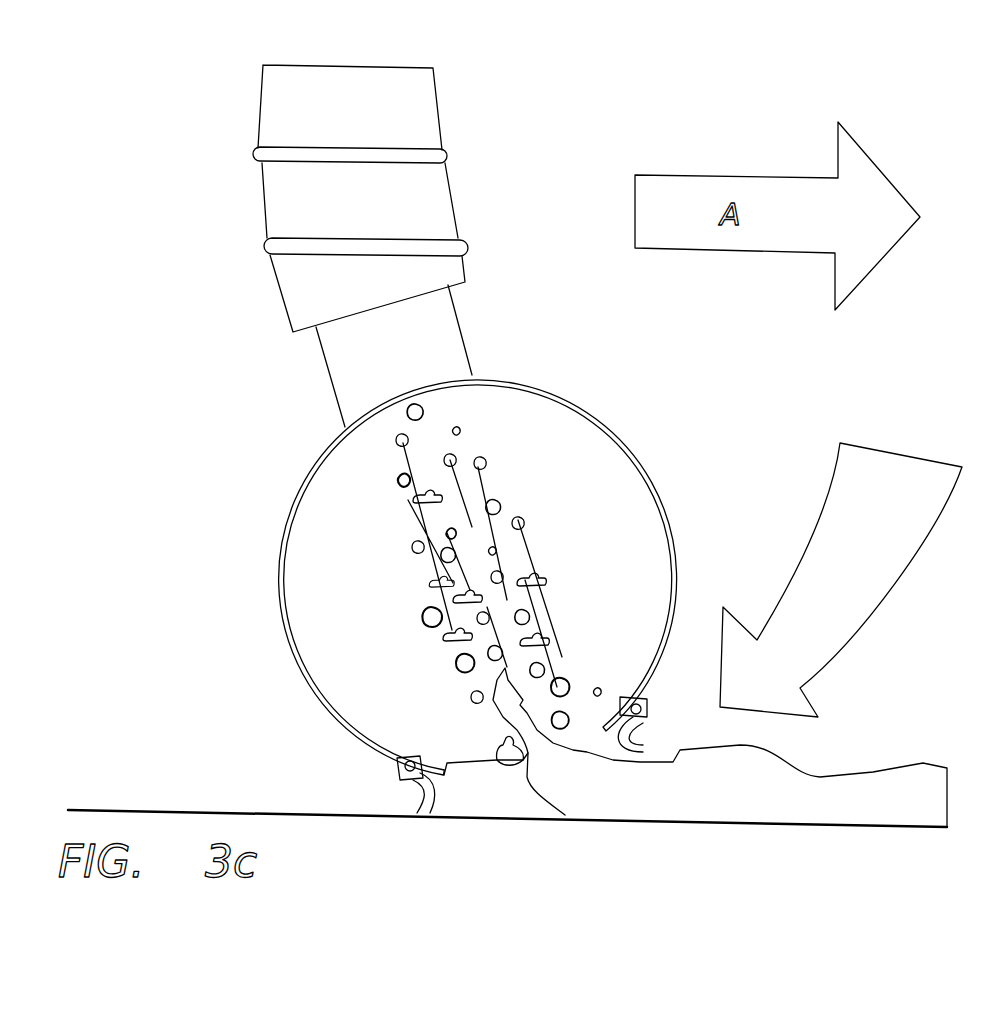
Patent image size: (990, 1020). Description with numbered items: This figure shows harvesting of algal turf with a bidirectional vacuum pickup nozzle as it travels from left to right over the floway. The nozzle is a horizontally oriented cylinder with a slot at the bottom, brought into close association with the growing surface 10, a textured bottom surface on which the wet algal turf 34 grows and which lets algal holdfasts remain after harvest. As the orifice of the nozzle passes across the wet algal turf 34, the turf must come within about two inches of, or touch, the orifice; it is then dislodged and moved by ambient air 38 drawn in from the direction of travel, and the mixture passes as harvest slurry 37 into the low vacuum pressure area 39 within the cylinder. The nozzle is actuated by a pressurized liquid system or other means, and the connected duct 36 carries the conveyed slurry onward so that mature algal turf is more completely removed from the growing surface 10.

The growing surface 10 is at (205, 810).
The wet algal turf 34 is at (837, 798).
The hose 36 is at (412, 193).
The harvest slurry 37 is at (433, 602).
The ambient air 38 is at (841, 580).
The low vacuum pressure area 39 is at (317, 483).